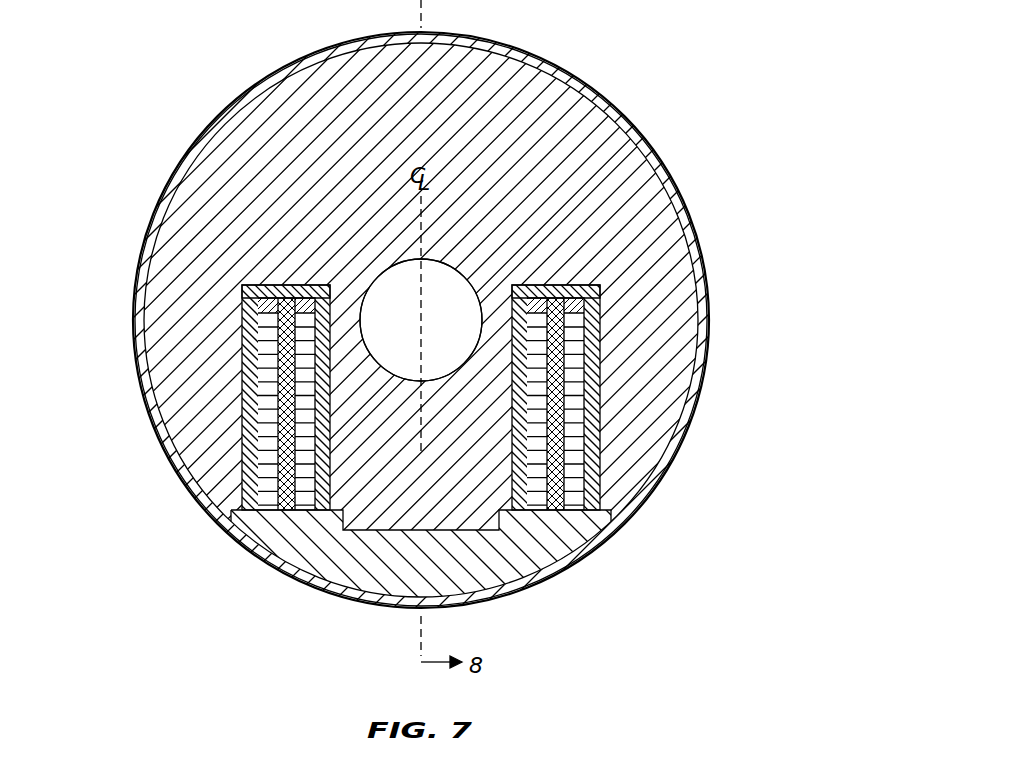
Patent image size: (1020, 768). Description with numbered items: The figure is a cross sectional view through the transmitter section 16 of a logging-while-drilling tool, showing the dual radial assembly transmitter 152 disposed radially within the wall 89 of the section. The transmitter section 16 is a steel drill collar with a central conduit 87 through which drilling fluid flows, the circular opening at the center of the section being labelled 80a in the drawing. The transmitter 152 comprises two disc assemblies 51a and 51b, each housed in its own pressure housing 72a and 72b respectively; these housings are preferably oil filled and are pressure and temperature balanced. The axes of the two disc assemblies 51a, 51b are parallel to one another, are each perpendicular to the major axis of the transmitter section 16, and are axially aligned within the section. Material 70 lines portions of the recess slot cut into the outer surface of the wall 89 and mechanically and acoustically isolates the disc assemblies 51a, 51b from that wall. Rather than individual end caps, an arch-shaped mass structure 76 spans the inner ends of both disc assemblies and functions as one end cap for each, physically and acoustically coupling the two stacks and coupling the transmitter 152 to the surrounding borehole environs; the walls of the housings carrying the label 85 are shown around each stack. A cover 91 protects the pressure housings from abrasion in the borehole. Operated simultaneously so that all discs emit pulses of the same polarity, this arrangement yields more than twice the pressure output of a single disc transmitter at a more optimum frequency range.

The transmitter section 16 is at (568, 95).
The cover 91 is at (272, 72).
The wall 89 is at (323, 163).
The dual radial assembly transmitter 152 is at (238, 437).
The central bore 80a is at (418, 347).
The conduit 87 is at (446, 284).
The material 70 is at (298, 288).
The pressure housing 72b is at (268, 285).
The pressure housing 72a is at (574, 285).
The disc assembly 51b is at (267, 335).
The disc assembly 51a is at (575, 335).
The coil housing wall 85 is at (250, 365).
The arch-shaped mass structure 76 is at (545, 556).